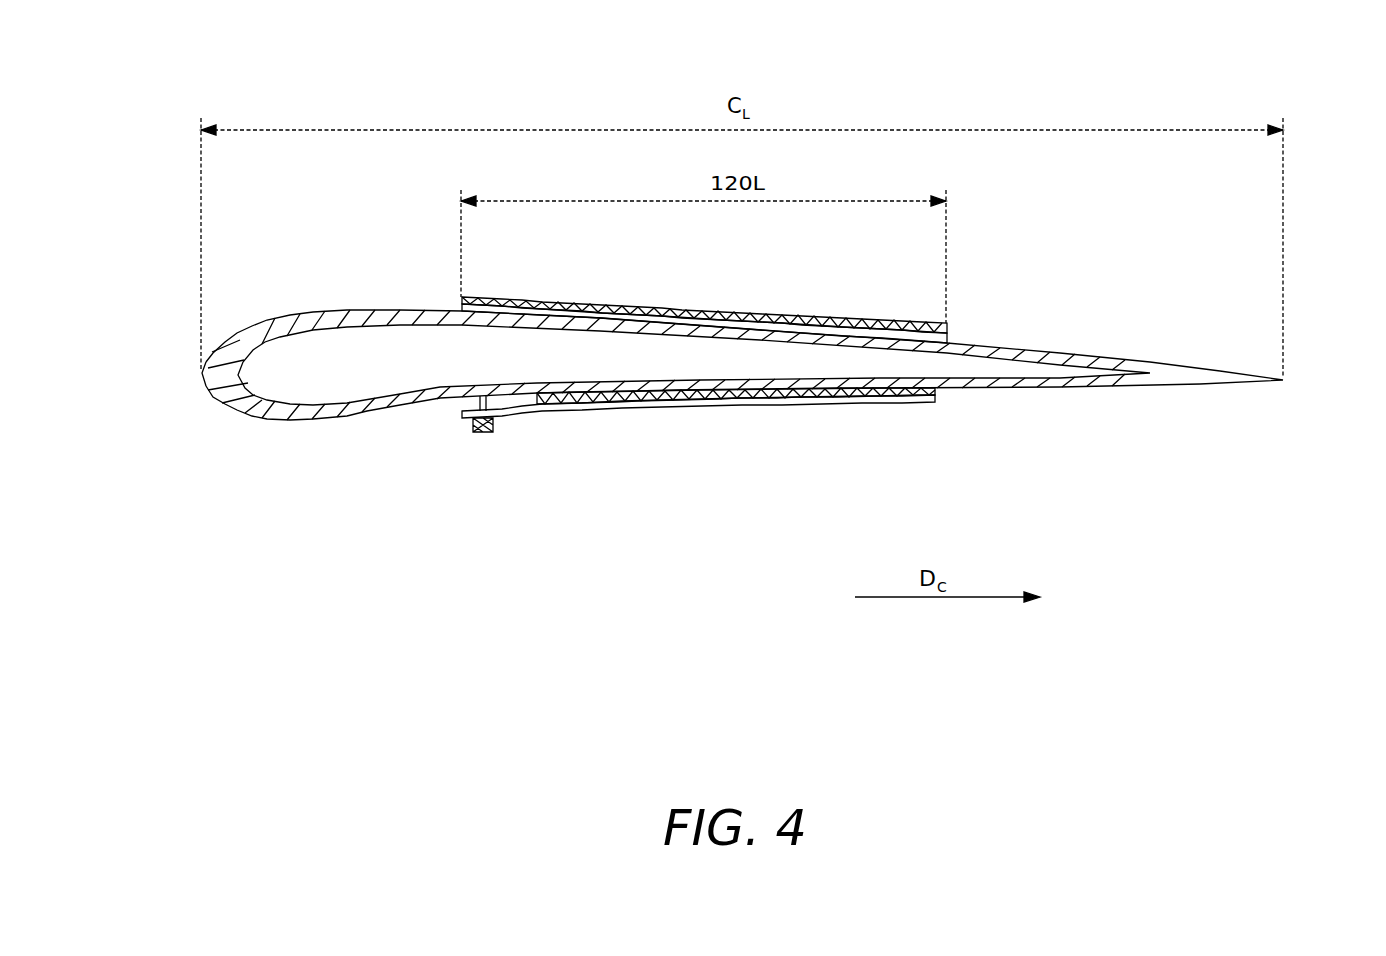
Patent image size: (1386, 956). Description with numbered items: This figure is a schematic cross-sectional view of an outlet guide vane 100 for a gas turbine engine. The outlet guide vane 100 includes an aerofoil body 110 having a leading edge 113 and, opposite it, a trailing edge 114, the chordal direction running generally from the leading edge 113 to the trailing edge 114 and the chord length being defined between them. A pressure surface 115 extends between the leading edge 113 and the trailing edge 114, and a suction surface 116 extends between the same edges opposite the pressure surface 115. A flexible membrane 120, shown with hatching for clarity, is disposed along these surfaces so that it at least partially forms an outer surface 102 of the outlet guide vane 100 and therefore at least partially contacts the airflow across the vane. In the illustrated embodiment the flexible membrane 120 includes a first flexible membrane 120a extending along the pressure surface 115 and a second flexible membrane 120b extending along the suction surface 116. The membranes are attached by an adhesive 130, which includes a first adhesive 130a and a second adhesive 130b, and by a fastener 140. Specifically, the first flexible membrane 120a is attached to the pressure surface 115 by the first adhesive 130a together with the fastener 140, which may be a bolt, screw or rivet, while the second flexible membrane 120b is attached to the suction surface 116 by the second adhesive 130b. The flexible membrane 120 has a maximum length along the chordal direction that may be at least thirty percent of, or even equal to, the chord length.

The outlet guide vane 100 is at (1047, 40).
The outer surface 102 is at (733, 402).
The aerofoil body 110 is at (237, 394).
The leading edge 113 is at (201, 372).
The trailing edge 114 is at (1283, 380).
The pressure surface 115 is at (347, 421).
The suction surface 116 is at (317, 310).
The flexible membrane 120 is at (704, 366).
The first flexible membrane 120a is at (870, 404).
The second flexible membrane 120b is at (828, 317).
The adhesive 130 is at (768, 367).
The first adhesive 130a is at (935, 399).
The second adhesive 130b is at (947, 333).
The fastener 140 is at (494, 424).